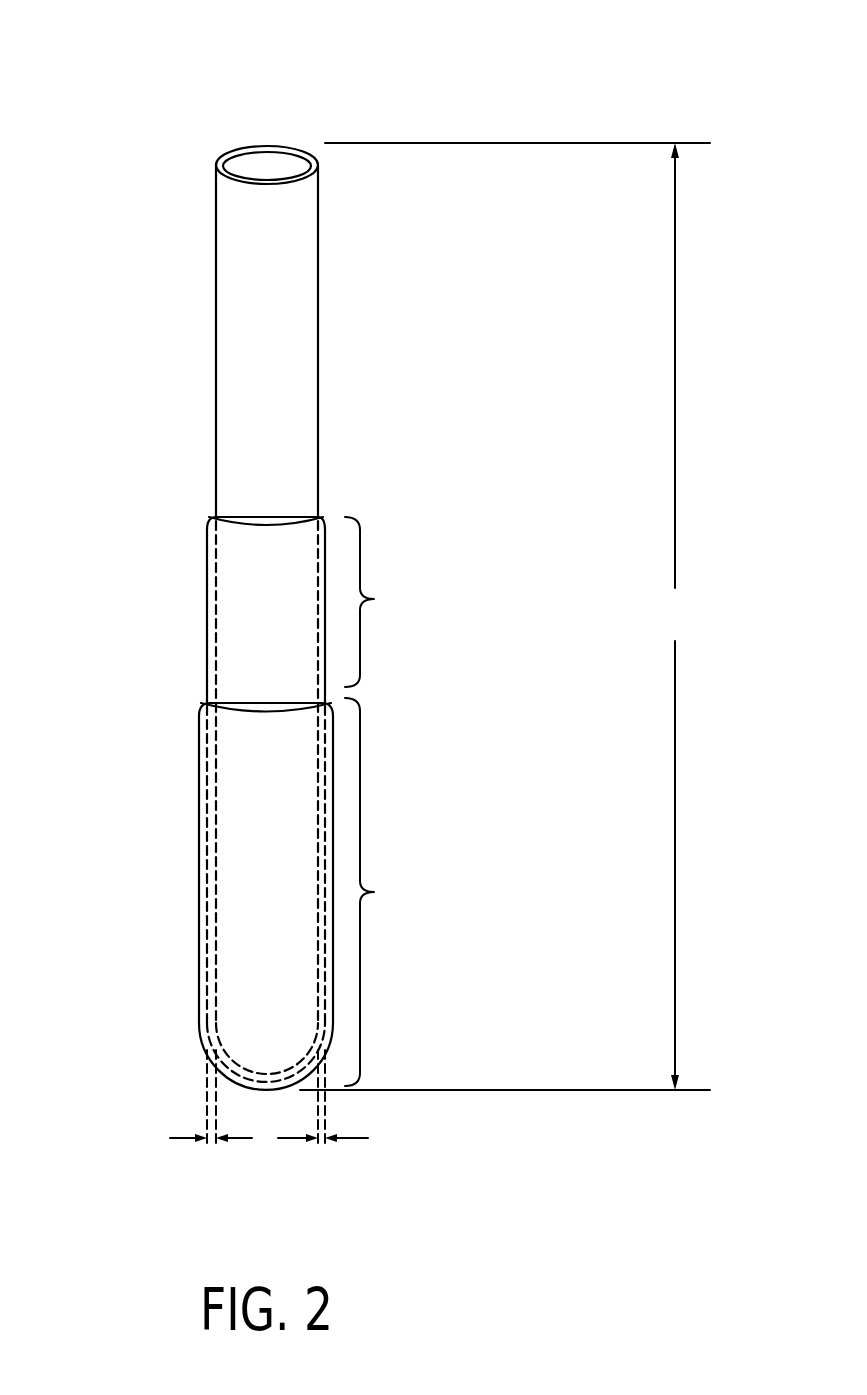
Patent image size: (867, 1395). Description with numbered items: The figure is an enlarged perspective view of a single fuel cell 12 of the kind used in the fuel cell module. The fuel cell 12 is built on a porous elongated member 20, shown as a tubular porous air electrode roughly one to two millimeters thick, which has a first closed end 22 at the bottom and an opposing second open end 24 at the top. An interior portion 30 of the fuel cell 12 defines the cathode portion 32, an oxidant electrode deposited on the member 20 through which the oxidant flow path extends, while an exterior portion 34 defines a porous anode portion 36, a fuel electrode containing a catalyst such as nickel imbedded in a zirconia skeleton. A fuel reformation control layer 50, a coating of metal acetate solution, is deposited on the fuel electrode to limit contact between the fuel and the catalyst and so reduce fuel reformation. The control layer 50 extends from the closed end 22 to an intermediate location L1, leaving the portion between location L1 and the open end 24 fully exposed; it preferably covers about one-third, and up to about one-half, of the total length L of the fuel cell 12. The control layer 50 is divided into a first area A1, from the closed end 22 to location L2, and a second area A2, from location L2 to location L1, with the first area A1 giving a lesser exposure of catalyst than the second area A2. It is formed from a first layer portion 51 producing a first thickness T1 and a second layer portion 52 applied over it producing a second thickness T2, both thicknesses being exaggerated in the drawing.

The fuel cell 12 is at (455, 70).
The porous elongated member 20 is at (216, 200).
The first closed end 22 is at (266, 1093).
The second open end 24 is at (296, 152).
The interior portion 30 is at (230, 151).
The cathode portion 32 is at (277, 163).
The exterior portion 34 is at (331, 463).
The anode portion 36 is at (302, 433).
The fuel reformation control layer 50 is at (109, 519).
The first layer portion 51 is at (207, 636).
The second layer portion 52 is at (199, 885).
The total length L is at (505, 616).
The location L1 is at (200, 511).
The location L2 is at (199, 705).
The first area A1 is at (378, 892).
The second area A2 is at (378, 602).
The first control layer thickness T1 is at (210, 1147).
The second control layer thickness T2 is at (323, 1147).